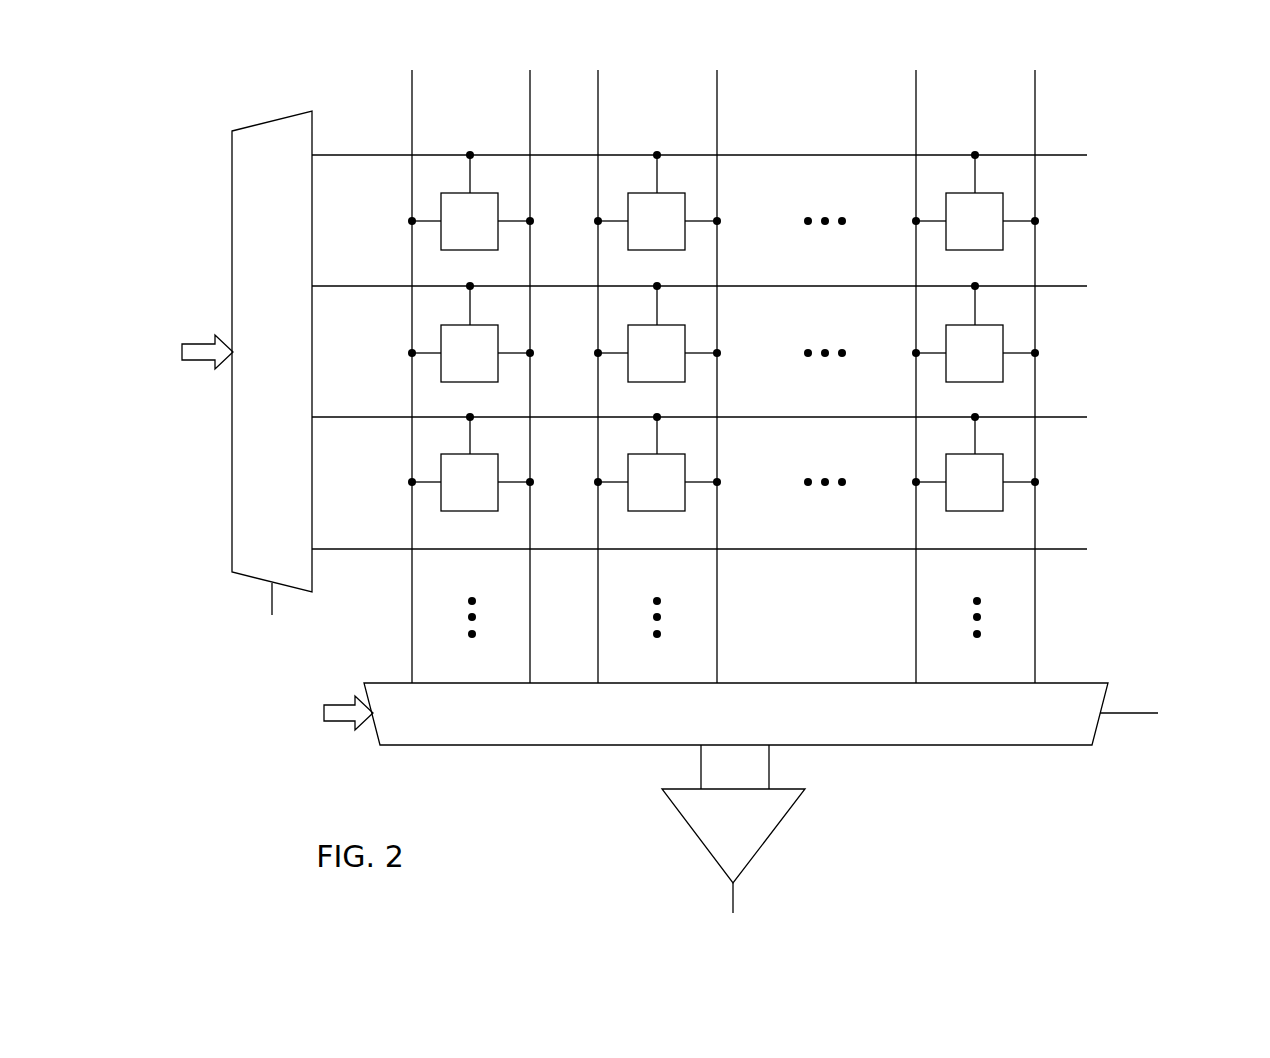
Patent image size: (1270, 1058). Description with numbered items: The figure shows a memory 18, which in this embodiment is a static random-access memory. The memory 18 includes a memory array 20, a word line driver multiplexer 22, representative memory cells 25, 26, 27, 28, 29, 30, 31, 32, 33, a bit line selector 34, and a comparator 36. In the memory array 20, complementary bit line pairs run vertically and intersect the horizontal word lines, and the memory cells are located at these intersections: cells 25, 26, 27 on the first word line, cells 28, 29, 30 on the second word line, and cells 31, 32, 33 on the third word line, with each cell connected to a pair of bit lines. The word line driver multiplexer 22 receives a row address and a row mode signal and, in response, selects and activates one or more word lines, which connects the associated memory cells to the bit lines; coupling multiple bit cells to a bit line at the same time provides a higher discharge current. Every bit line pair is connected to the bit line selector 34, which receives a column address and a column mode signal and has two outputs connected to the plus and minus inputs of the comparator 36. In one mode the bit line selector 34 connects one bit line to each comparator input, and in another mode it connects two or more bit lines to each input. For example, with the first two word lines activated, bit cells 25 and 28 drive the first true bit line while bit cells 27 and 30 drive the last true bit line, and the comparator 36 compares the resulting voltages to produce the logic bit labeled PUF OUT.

The memory 18 is at (198, 820).
The memory array 20 is at (1022, 38).
The word line driver multiplexer 22 is at (261, 446).
The memory cell 25 is at (459, 231).
The memory cell 26 is at (646, 231).
The memory cell 27 is at (964, 231).
The memory cell 28 is at (459, 363).
The memory cell 29 is at (646, 363).
The memory cell 30 is at (964, 363).
The memory cell 31 is at (459, 492).
The memory cell 32 is at (646, 492).
The memory cell 33 is at (964, 492).
The bit line selector 34 is at (486, 723).
The comparator 36 is at (720, 840).